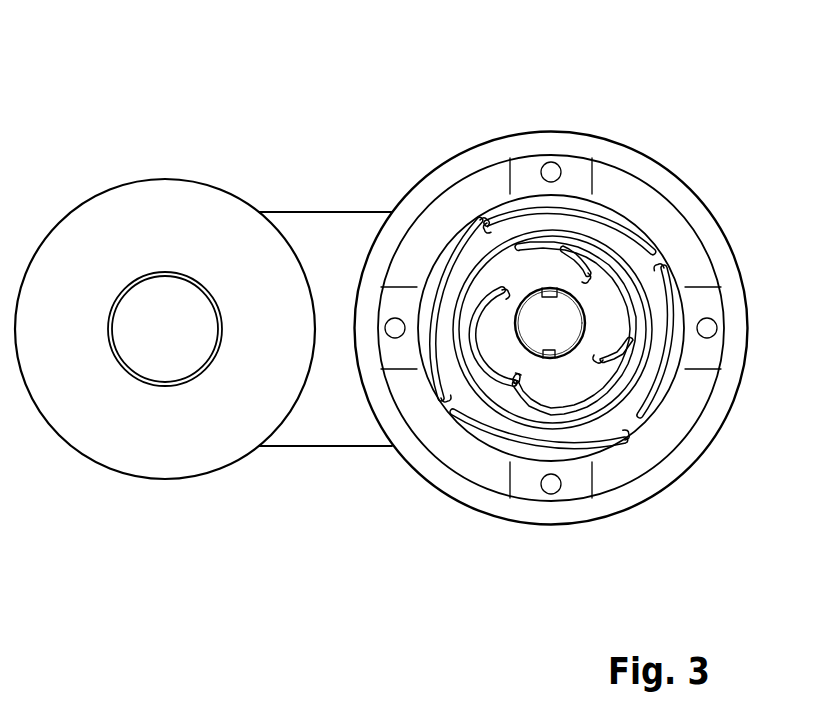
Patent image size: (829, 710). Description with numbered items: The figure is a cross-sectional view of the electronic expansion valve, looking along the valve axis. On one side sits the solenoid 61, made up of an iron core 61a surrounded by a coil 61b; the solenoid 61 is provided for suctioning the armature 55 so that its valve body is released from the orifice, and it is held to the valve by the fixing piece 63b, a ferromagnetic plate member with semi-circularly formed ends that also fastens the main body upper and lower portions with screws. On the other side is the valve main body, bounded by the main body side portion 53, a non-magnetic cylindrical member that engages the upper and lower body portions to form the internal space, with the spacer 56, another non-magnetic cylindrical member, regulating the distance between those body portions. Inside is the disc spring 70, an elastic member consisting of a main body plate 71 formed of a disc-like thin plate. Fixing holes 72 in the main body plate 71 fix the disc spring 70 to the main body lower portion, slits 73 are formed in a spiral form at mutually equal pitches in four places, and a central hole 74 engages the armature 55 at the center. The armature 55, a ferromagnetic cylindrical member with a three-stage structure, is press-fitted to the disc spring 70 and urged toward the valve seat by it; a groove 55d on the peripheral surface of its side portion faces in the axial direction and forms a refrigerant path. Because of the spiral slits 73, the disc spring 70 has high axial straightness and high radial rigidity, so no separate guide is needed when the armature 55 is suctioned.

The solenoid 61 is at (165, 366).
The iron core 61a is at (157, 287).
The coil 61b is at (167, 458).
The fixing piece 63b is at (318, 425).
The disc spring 70 is at (572, 287).
The main body side portion 53 is at (498, 143).
The spacer 56 is at (465, 202).
The fixing holes 72 is at (705, 333).
The main body plate 71 is at (583, 307).
The central hole 74 is at (627, 287).
The slits 73 is at (655, 372).
The armature 55 is at (538, 335).
The groove 55d is at (543, 357).